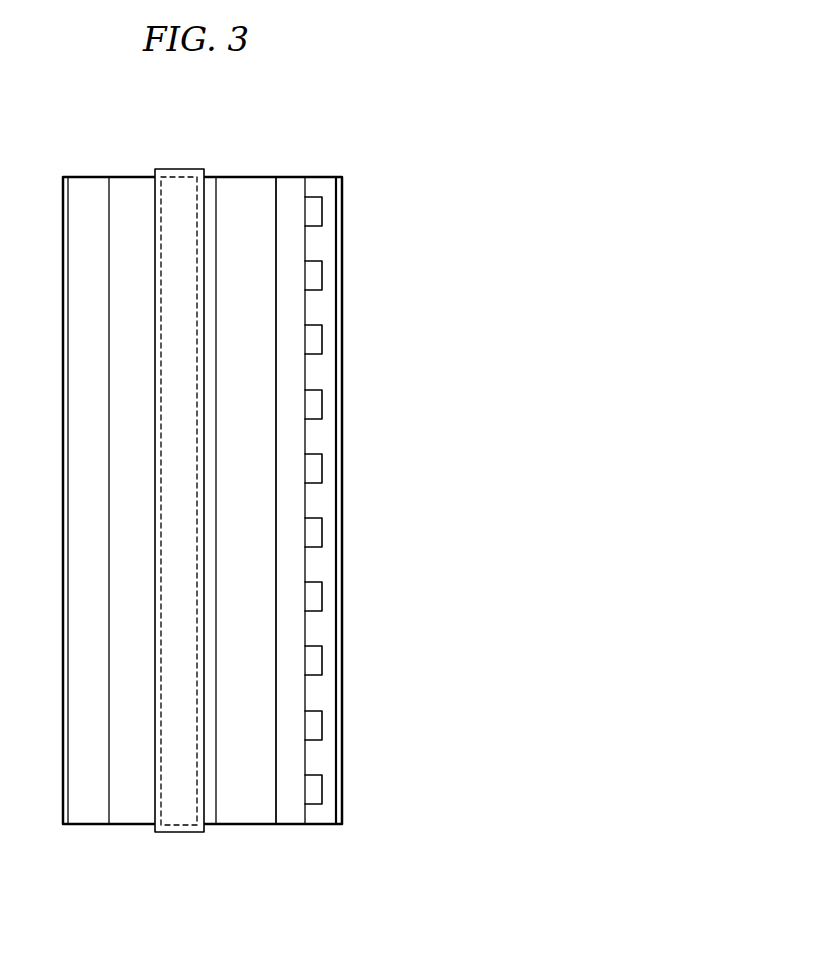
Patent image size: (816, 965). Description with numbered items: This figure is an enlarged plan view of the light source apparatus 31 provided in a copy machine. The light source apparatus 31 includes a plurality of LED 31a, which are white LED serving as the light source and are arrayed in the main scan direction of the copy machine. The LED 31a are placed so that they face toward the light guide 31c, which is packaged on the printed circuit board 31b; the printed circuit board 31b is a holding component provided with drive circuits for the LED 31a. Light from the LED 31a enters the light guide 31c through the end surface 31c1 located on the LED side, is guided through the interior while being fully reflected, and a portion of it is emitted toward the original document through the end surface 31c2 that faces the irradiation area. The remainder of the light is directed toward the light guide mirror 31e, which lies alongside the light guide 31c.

The light source apparatus 31 is at (420, 251).
The LED 31a is at (317, 343).
The printed circuit board 31b is at (332, 691).
The light guide 31c is at (247, 210).
The end surface 31c1 is at (276, 208).
The end surface 31c2 is at (155, 200).
The light guide mirror 31e is at (88, 208).